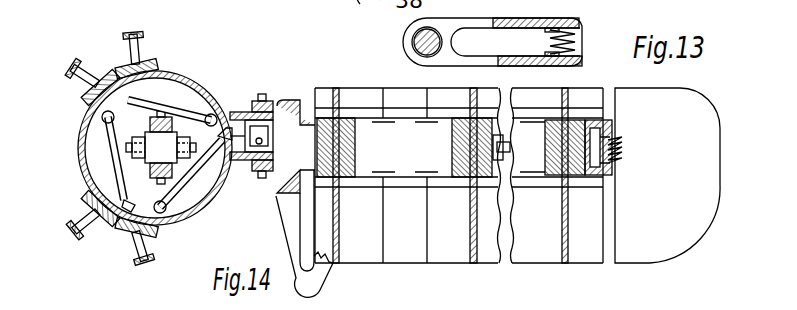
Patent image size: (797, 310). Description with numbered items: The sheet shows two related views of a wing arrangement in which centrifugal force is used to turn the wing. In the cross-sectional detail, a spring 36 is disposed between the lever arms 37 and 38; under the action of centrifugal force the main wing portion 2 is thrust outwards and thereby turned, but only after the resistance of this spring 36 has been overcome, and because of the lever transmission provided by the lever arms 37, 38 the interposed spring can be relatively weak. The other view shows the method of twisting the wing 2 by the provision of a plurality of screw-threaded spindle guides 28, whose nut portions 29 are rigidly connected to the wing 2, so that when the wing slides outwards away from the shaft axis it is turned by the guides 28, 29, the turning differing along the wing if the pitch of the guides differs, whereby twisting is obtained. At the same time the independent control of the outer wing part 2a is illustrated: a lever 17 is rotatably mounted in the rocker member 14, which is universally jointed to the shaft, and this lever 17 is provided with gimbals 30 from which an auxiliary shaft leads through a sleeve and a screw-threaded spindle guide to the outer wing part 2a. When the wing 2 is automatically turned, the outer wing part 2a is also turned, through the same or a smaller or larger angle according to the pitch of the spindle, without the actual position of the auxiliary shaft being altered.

In FIG. 14, the wing 2 is at (537, 258).
In FIG. 14, the outer part of the wing 2a is at (663, 252).
In FIG. 14, the rocker member 14 is at (172, 226).
In FIG. 14, the lever 17 is at (195, 190).
In FIG. 14, the screw-threaded spindle guides 28 is at (338, 121).
In FIG. 14, the nut portions 29 is at (473, 250).
In FIG. 14, the gimbals 30 is at (278, 104).
In FIG. 13, the spring 36 is at (576, 44).
In FIG. 13, the lever arm 37 is at (456, 58).
In FIG. 13, the lever arm 38 is at (521, 20).